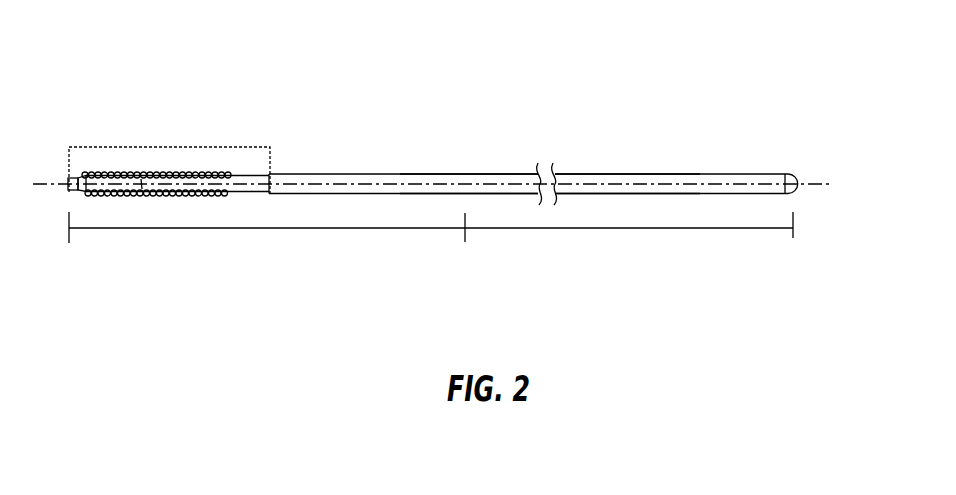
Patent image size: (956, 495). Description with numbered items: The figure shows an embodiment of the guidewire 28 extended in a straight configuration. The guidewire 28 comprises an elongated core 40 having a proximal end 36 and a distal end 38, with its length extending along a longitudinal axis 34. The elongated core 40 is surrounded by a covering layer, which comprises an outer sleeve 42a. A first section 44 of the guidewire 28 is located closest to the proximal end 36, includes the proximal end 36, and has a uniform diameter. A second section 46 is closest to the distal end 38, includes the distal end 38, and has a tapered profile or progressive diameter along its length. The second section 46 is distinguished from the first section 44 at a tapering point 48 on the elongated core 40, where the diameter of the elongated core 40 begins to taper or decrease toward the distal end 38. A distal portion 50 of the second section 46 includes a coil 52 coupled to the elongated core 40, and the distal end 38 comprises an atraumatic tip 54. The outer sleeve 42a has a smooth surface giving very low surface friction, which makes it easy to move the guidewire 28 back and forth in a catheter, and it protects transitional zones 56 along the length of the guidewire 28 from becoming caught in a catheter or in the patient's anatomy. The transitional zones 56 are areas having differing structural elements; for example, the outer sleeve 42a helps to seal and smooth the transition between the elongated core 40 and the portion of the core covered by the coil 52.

The guidewire 28 is at (597, 130).
The longitudinal axis 34 is at (747, 173).
The proximal end 36 is at (795, 172).
The distal end 38 is at (68, 188).
The elongated core 40 is at (718, 173).
The outer sleeve 42a is at (447, 173).
The first section 44 is at (656, 229).
The second section 46 is at (272, 229).
The tapering point 48 is at (465, 238).
The distal portion 50 is at (171, 146).
The coil 52 is at (230, 173).
The atraumatic tip 54 is at (73, 152).
The transitional zones 56 is at (277, 167).